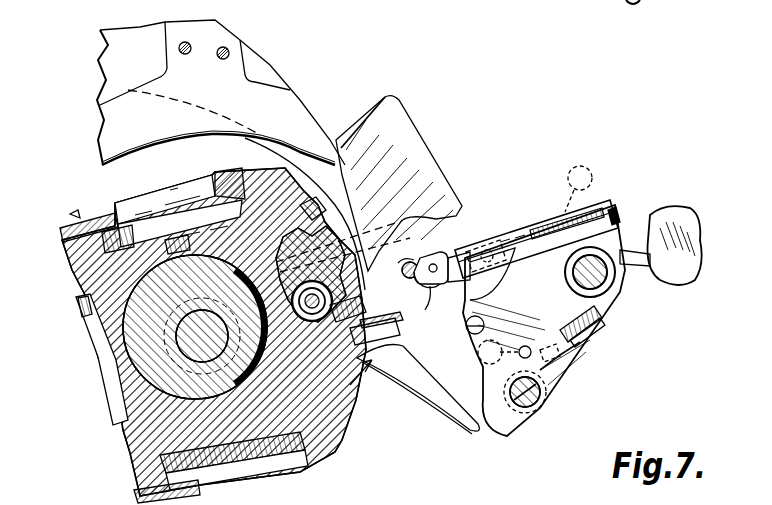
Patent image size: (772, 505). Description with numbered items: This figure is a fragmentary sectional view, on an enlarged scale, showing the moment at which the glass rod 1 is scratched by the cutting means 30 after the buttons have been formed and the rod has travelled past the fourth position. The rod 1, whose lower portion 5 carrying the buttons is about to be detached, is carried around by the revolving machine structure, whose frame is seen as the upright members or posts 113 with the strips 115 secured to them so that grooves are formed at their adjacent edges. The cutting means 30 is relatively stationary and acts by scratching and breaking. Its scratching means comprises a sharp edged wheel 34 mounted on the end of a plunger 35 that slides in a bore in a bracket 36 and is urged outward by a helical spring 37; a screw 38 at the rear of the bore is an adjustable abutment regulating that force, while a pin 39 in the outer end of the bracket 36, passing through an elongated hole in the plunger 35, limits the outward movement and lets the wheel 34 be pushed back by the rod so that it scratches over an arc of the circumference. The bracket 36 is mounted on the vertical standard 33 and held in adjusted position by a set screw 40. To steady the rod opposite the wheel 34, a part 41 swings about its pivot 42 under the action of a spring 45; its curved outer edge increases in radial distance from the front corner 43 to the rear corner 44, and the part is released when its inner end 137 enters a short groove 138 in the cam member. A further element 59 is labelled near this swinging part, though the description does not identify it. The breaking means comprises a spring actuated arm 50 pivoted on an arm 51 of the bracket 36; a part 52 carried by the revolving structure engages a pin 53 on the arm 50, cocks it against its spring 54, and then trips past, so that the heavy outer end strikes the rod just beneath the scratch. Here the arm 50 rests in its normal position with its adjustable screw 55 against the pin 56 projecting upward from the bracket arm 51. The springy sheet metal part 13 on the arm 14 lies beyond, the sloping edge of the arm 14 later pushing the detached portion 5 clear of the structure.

The rod 1 is at (435, 297).
The portion of the rod 5 is at (414, 262).
The part 13 is at (218, 127).
The arm 14 is at (150, 24).
The cutting means 30 is at (553, 320).
The supporting member or standard 33 is at (612, 278).
The sharp edged wheel 34 is at (438, 254).
The plunger or rod 35 is at (456, 272).
The bracket 36 is at (548, 216).
The helical spring 37 is at (578, 189).
The screw 38 is at (614, 210).
The pin 39 is at (490, 240).
The set screw 40 is at (700, 265).
The part 41 is at (360, 305).
The pivot 42 is at (333, 300).
The front corner 43 is at (405, 318).
The rear corner 44 is at (344, 247).
The spring 45 is at (400, 250).
The spring actuated arm 50 is at (448, 182).
The arm of the bracket 51 is at (570, 364).
The part 52 is at (448, 424).
The pin 53 is at (485, 326).
The spring 54 is at (542, 396).
The adjustable screw 55 is at (596, 330).
The pin 56 is at (519, 352).
The pawl 59 is at (320, 216).
The upright members or posts 113 is at (72, 275).
The strips 115 is at (60, 232).
The inner end 137 is at (225, 336).
The groove 138 is at (195, 327).